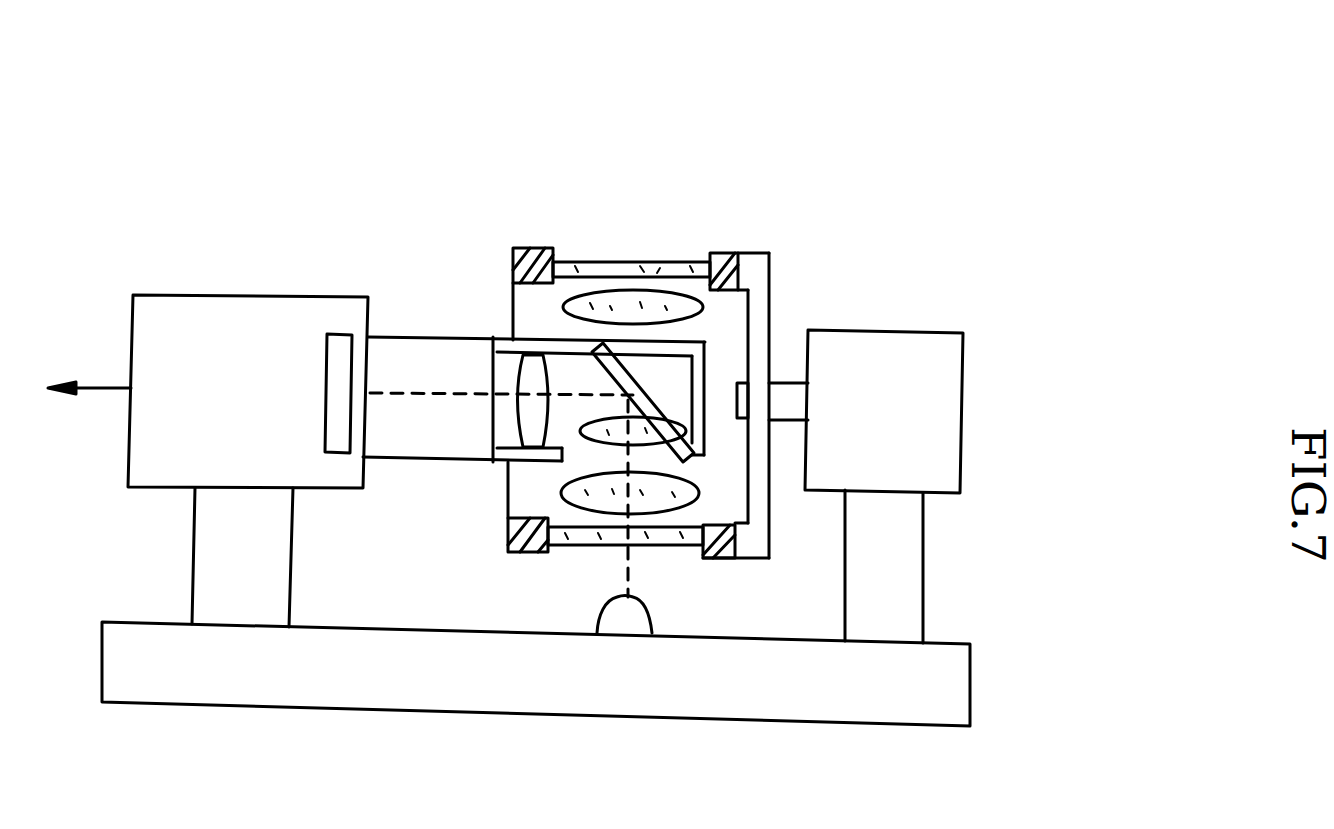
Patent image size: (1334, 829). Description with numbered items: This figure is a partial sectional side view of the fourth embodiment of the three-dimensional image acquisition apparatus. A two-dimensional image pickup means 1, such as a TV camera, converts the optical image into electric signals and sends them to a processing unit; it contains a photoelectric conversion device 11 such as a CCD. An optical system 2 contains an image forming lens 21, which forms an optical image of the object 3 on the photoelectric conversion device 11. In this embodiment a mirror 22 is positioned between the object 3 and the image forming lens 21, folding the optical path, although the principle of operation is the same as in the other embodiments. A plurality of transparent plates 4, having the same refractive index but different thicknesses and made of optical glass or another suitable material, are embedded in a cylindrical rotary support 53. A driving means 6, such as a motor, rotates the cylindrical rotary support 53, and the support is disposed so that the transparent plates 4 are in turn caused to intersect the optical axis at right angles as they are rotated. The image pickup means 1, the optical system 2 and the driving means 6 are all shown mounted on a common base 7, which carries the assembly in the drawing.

The two-dimensional image pickup means 1 is at (242, 296).
The optical system 2 is at (412, 340).
The object 3 is at (607, 621).
The transparent plates 4 is at (601, 302).
The driving means 6 is at (930, 352).
The base 7 is at (836, 712).
The photoelectric conversion device 11 is at (338, 350).
The image forming lens 21 is at (533, 390).
The mirror 22 is at (655, 408).
The cylindrical rotary support 53 is at (760, 277).